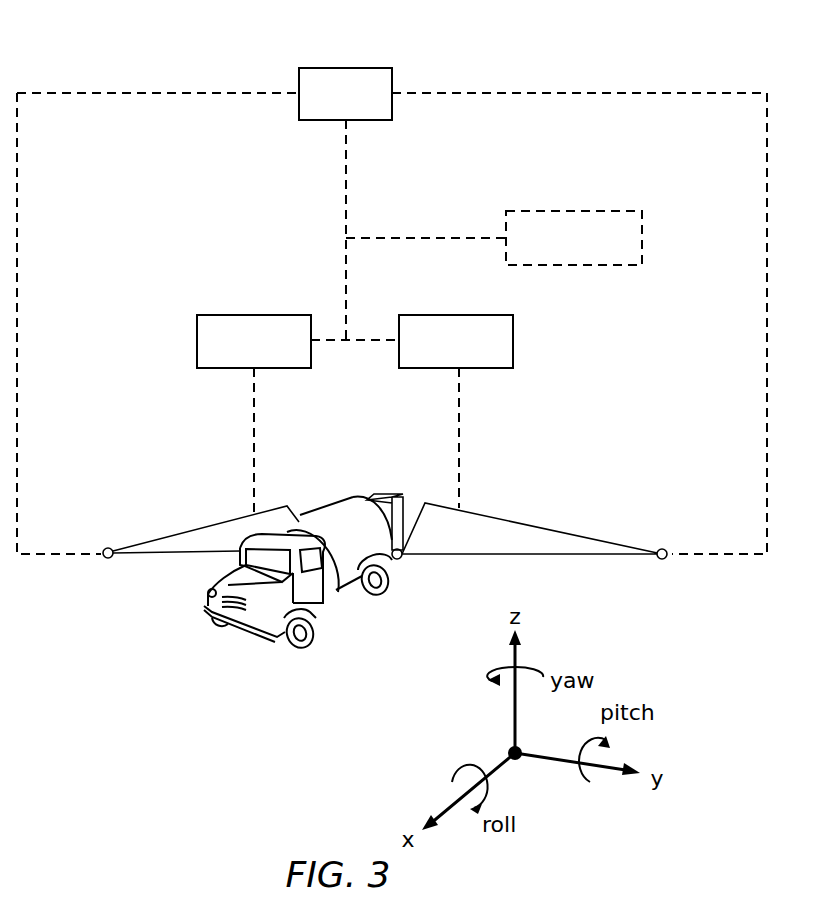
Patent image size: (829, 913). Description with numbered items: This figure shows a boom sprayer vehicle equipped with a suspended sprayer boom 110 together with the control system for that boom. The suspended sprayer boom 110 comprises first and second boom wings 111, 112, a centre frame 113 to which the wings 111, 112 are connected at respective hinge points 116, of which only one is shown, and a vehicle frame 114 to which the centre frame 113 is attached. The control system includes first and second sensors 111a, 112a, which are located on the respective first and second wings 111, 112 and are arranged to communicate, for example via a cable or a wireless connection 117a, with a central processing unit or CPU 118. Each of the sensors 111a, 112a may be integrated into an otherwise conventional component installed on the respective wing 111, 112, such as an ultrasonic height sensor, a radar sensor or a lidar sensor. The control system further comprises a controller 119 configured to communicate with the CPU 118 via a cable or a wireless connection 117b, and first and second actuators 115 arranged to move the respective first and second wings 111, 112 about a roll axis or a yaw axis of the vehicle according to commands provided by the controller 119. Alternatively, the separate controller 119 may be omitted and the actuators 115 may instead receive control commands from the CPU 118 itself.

The suspended sprayer boom 110 is at (541, 448).
The first boom wing 111 is at (180, 545).
The first sensor 111a is at (108, 547).
The second boom wing 112 is at (525, 530).
The second sensor 112a is at (668, 548).
The centre frame 113 is at (385, 496).
The vehicle frame 114 is at (314, 493).
The actuator 115 is at (251, 315).
The hinge point 116 is at (405, 565).
The cable or wireless connection 117a is at (648, 93).
The cable or wireless connection 117b is at (432, 238).
The central processing unit 118 is at (344, 68).
The controller 119 is at (570, 211).